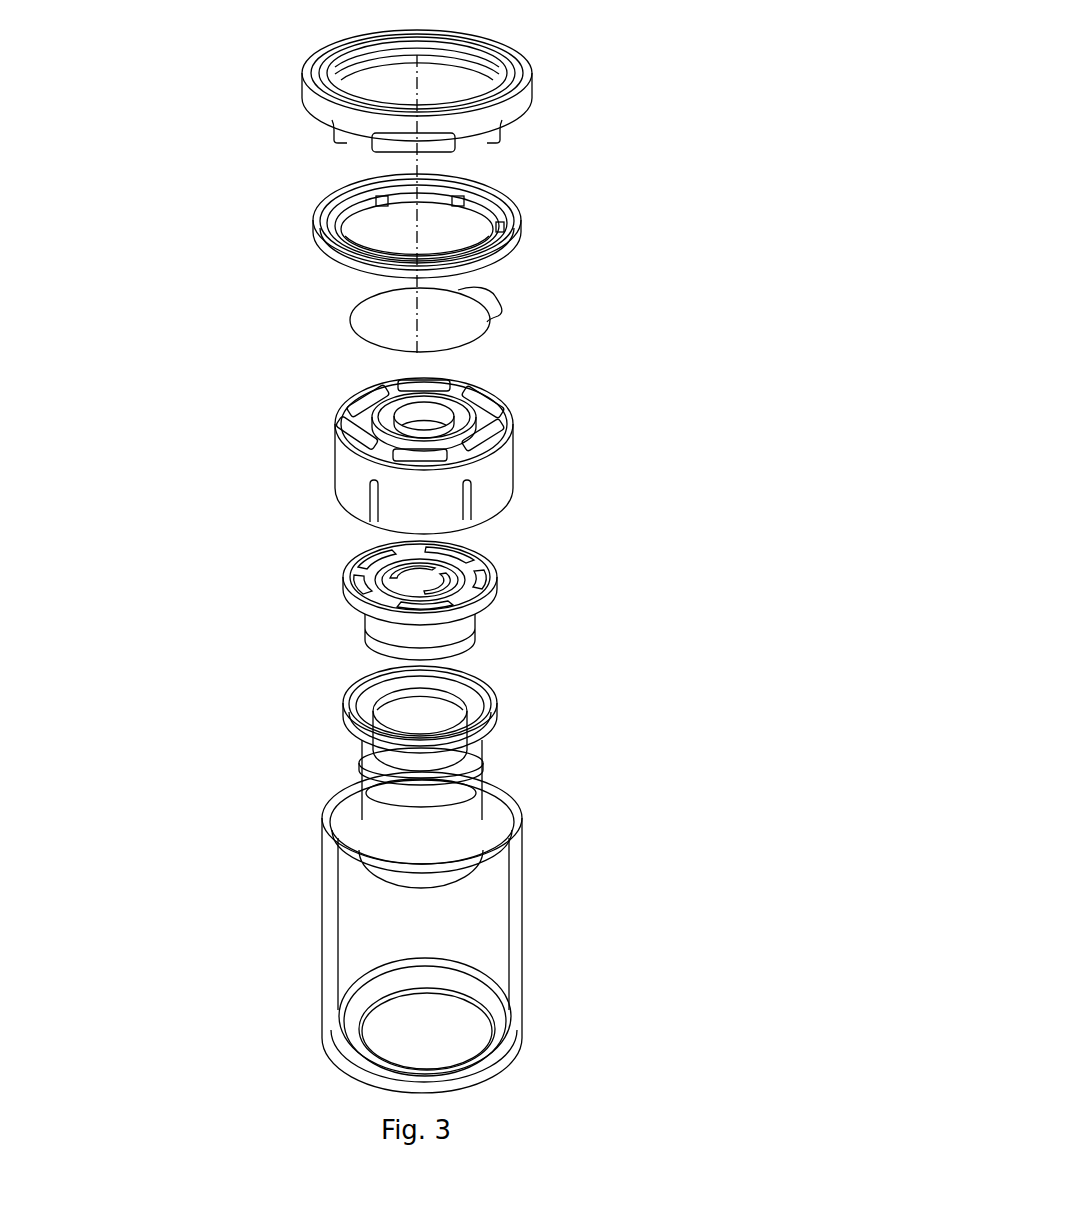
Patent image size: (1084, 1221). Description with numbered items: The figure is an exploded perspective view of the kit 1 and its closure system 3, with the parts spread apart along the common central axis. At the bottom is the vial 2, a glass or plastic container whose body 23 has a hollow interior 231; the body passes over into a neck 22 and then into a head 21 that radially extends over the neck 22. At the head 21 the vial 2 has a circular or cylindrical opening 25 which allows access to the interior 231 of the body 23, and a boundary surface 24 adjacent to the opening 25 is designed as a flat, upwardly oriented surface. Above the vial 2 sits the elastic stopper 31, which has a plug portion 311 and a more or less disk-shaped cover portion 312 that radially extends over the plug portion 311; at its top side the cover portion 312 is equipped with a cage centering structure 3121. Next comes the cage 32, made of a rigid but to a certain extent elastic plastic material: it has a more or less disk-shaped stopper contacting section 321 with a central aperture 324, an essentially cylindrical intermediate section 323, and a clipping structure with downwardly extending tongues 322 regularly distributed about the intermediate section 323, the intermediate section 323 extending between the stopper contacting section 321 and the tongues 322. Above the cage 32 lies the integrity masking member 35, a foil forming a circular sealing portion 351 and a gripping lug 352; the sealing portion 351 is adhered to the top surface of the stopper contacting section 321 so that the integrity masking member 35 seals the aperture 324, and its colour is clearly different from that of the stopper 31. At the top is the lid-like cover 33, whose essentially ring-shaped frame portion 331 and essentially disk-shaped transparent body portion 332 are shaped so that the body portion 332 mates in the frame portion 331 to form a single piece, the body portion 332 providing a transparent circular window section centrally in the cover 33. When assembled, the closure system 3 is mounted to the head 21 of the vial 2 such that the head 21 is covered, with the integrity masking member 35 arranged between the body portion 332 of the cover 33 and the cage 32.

The kit 1 is at (290, 838).
The vial 2 is at (300, 947).
The closure system 3 is at (585, 246).
The head 21 is at (330, 718).
The neck 22 is at (480, 762).
The body 23 is at (512, 932).
The boundary surface 24 is at (345, 685).
The opening 25 is at (422, 713).
The hollow interior 231 is at (484, 952).
The stopper 31 is at (513, 591).
The plug portion 311 is at (375, 643).
The cover portion 312 is at (332, 566).
The cage centering structure 3121 is at (360, 573).
The cage 32 is at (553, 445).
The stopper contacting section 321 is at (500, 422).
The tongues 322 is at (494, 494).
The intermediate section 323 is at (360, 467).
The central aperture 324 is at (428, 413).
The cover 33 is at (283, 103).
The frame portion 331 is at (520, 93).
The body portion 332 is at (315, 222).
The integrity masking member 35 is at (330, 322).
The sealing portion 351 is at (382, 313).
The gripping lug 352 is at (503, 308).